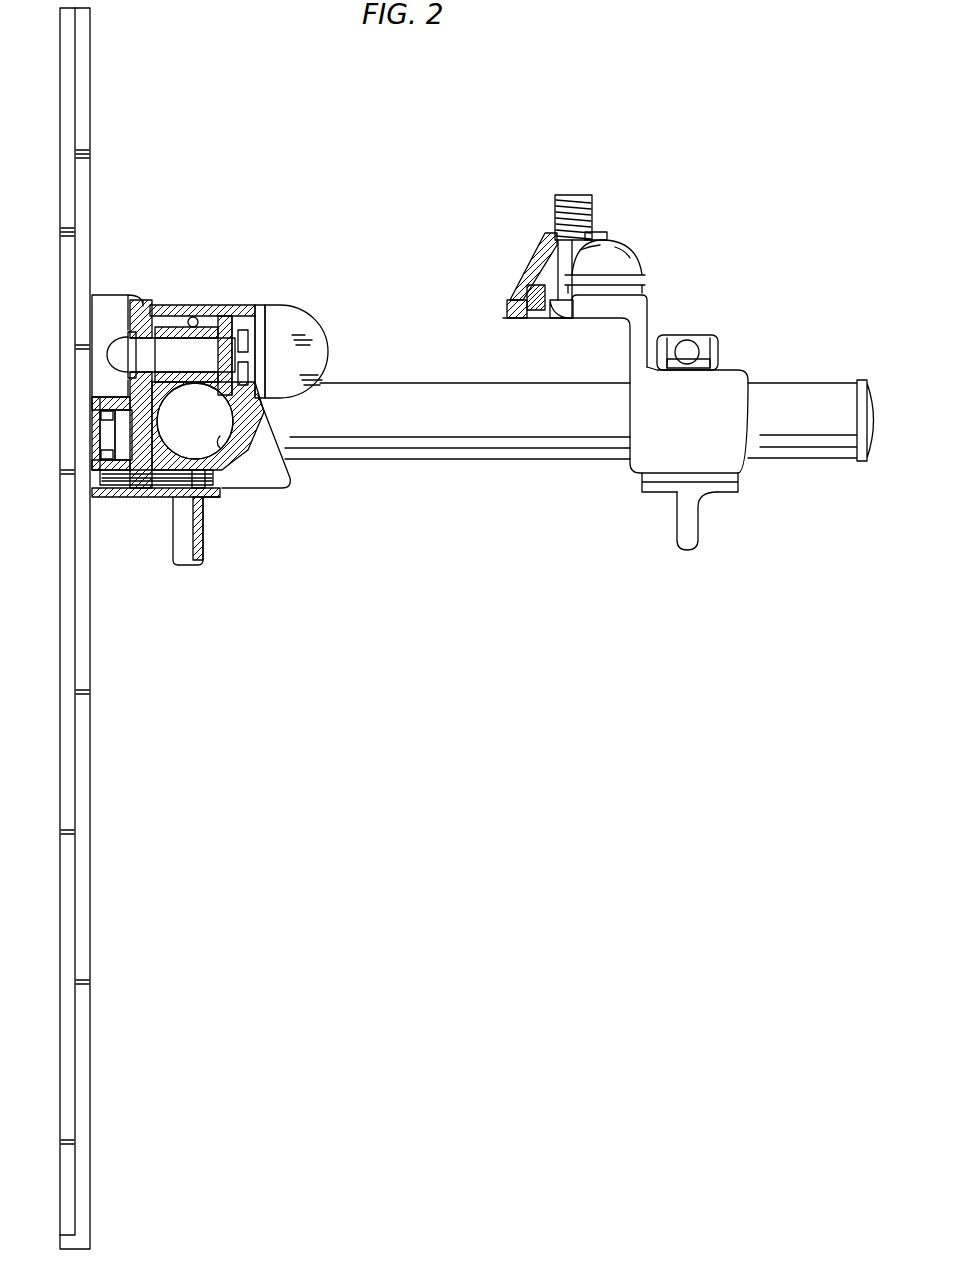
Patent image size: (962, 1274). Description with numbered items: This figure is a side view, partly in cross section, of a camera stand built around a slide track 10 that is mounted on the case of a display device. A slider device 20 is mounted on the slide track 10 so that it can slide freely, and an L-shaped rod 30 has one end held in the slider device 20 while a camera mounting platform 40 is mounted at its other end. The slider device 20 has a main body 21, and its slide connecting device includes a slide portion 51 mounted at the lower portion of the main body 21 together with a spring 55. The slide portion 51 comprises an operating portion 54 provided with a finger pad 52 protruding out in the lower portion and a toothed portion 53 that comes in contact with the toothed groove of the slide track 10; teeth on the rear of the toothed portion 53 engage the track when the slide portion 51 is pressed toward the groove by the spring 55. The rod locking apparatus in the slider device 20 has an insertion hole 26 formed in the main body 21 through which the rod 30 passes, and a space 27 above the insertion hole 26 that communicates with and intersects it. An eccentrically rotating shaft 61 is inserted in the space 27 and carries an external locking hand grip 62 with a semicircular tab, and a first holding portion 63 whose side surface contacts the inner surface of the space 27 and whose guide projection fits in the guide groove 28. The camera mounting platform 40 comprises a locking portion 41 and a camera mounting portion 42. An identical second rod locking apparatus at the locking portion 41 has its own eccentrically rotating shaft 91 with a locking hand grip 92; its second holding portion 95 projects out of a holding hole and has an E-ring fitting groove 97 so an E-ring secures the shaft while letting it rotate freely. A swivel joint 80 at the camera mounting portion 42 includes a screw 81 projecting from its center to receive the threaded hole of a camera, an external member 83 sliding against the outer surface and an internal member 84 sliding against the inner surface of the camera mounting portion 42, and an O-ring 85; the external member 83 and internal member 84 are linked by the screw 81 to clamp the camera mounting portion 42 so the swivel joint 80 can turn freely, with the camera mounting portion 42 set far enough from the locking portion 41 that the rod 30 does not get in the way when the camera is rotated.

The slide track 10 is at (85, 118).
The slider device 20 is at (193, 468).
The main body 21 is at (168, 310).
The insertion hole 26 is at (217, 437).
The space 27 is at (218, 330).
The guide groove 28 is at (258, 315).
The rod 30 is at (490, 443).
The camera mounting platform 40 is at (602, 492).
The locking portion 41 is at (725, 437).
The camera mounting portion 42 is at (635, 313).
The slide portion 51 is at (123, 498).
The finger pad 52 is at (183, 553).
The toothed portion 53 is at (82, 460).
The operating portion 54 is at (147, 497).
The spring 55 is at (113, 442).
The eccentrically rotating shaft 61 is at (288, 335).
The locking hand grip 62 is at (331, 314).
The first holding portion 63 is at (191, 316).
The swivel joint 80 is at (562, 237).
The screw 81 is at (573, 200).
The external member 83 is at (527, 247).
The internal member 84 is at (510, 308).
The O-ring 85 is at (517, 283).
The eccentrically rotating shaft 91 is at (673, 488).
The locking hand grip 92 is at (690, 532).
The second holding portion 95 is at (685, 348).
The E-ring fitting groove 97 is at (718, 347).